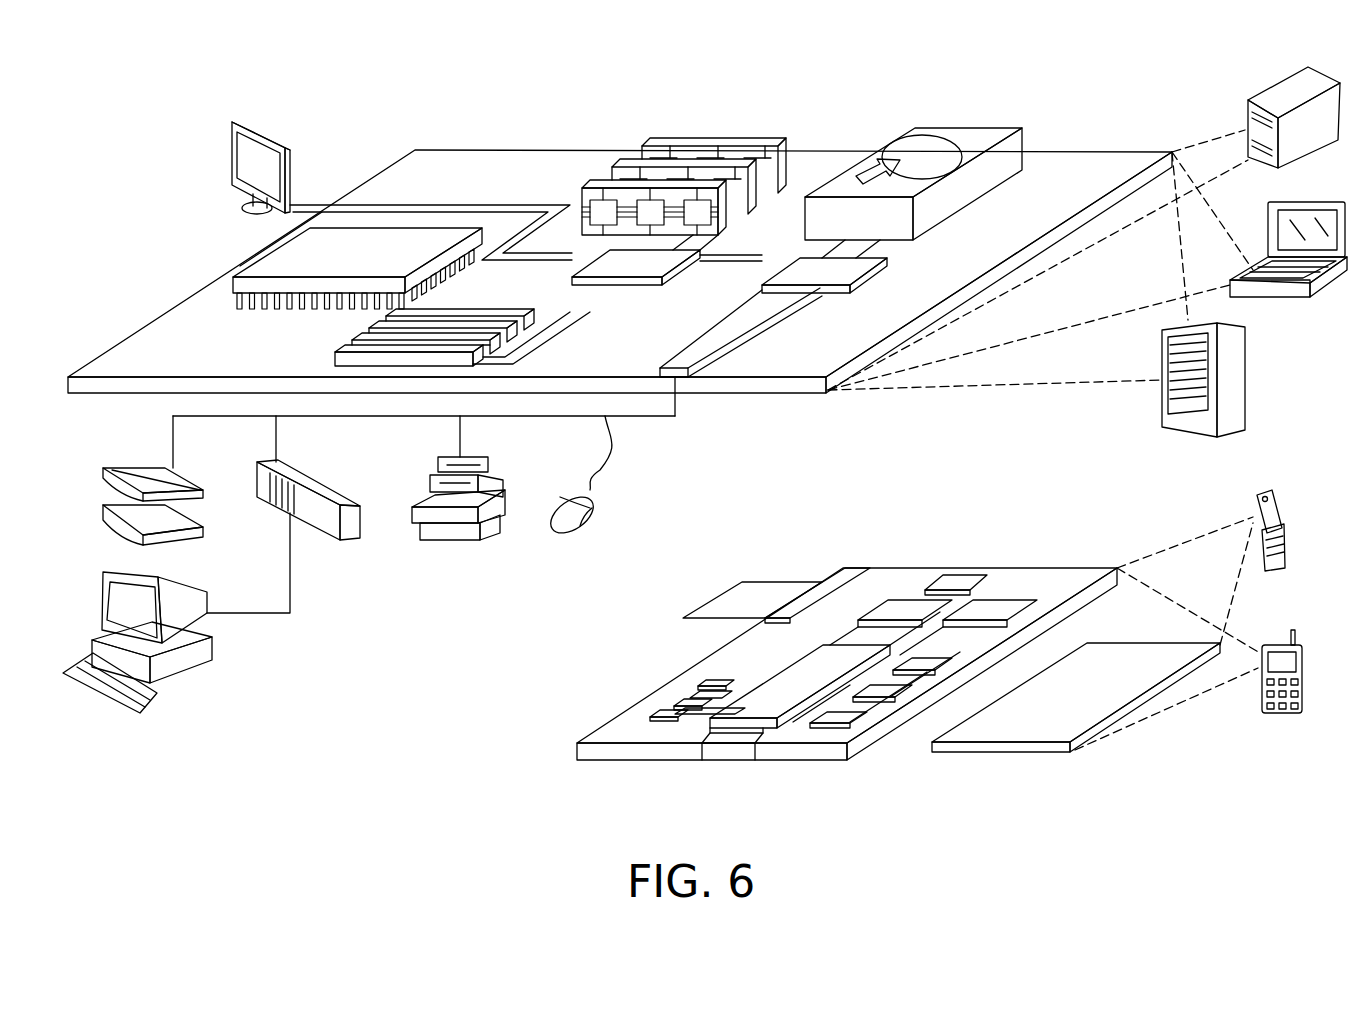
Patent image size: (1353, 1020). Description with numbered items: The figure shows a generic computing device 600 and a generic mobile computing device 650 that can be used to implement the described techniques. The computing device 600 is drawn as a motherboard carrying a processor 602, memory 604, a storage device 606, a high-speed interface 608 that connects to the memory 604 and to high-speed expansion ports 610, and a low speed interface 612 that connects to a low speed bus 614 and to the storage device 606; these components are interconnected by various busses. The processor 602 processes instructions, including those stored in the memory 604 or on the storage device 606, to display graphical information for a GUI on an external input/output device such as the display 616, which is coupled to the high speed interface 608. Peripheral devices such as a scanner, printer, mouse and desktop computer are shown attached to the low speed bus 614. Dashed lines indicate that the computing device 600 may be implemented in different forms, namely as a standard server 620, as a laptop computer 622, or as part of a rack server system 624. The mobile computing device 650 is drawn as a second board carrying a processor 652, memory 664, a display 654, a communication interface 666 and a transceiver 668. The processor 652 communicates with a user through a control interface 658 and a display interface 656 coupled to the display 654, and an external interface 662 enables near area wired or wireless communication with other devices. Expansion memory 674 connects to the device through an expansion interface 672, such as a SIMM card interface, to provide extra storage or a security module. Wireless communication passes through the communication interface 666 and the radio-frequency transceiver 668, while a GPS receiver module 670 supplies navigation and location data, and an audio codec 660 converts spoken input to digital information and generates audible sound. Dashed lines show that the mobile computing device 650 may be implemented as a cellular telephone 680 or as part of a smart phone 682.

The computing device 600 is at (365, 98).
The processor 602 is at (258, 260).
The memory 604 is at (718, 146).
The storage device 606 is at (955, 126).
The high-speed interface 608 is at (650, 262).
The high-speed expansion ports 610 is at (365, 340).
The low speed interface 612 is at (797, 270).
The low speed bus 614 is at (680, 365).
The display 616 is at (235, 122).
The standard server 620 is at (1270, 98).
The laptop computer 622 is at (1325, 202).
The rack server system 624 is at (1247, 379).
The mobile computing device 650 is at (528, 768).
The processor 652 is at (768, 692).
The display 654 is at (1115, 660).
The display interface 656 is at (860, 718).
The control interface 658 is at (885, 690).
The audio codec 660 is at (925, 662).
The external interface 662 is at (727, 758).
The memory 664 is at (680, 698).
The communication interface 666 is at (905, 605).
The transceiver 668 is at (1000, 605).
The GPS receiver module 670 is at (957, 580).
The expansion interface 672 is at (827, 580).
The expansion memory 674 is at (742, 582).
The cellular telephone 680 is at (1266, 492).
The smart phone 682 is at (1278, 645).